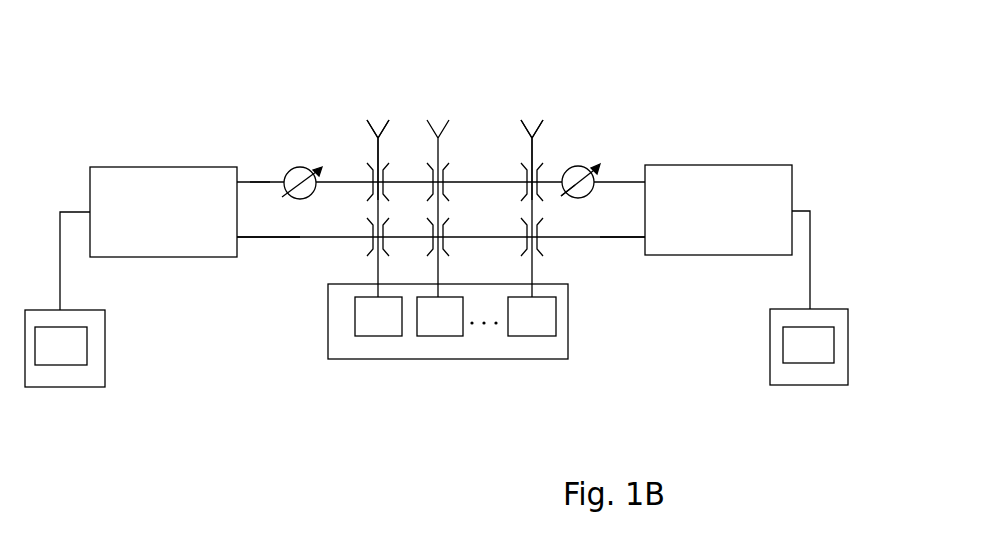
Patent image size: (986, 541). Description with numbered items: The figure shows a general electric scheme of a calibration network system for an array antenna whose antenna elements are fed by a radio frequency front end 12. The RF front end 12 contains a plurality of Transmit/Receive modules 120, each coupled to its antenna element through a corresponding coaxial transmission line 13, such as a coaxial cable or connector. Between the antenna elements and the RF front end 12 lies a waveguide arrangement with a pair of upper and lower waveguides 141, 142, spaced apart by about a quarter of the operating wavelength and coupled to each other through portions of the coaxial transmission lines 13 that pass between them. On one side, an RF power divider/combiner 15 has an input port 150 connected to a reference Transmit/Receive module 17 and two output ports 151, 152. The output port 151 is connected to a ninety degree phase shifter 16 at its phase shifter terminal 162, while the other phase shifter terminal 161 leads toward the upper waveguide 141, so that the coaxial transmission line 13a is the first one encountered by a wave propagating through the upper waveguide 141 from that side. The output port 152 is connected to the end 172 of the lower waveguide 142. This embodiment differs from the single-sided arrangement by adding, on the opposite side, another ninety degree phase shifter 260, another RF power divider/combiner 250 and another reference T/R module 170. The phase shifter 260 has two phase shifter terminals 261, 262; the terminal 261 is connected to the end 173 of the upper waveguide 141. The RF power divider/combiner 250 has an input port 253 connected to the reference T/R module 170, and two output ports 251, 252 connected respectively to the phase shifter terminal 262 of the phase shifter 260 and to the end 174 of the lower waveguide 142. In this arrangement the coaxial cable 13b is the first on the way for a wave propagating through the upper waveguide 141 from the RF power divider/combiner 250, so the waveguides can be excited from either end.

The radio frequency front end 12 is at (520, 359).
The Transmit/Receive modules 120 is at (368, 336).
The coaxial transmission lines 13 is at (438, 103).
The coaxial transmission line 13a is at (376, 147).
The coaxial cable 13b is at (530, 145).
The RF power divider/combiner 15 is at (152, 165).
The input port 150 is at (89, 211).
The output port 151 is at (238, 180).
The output port 152 is at (240, 240).
The 90 degree phase shifter 16 is at (288, 169).
The phase shifter terminal 161 is at (326, 172).
The phase shifter terminal 162 is at (262, 178).
The upper waveguide 141 is at (354, 185).
The lower waveguide 142 is at (302, 236).
The reference Transmit/Receive Module 17 is at (62, 365).
The reference Transmit/Receive Module 170 is at (802, 363).
The end of the lower rectangular waveguide 172 is at (292, 273).
The end of the upper rectangular waveguide 173 is at (560, 118).
The end of the lower rectangular waveguide 174 is at (558, 258).
The RF power divider/combiner 250 is at (718, 164).
The output port 251 is at (642, 180).
The output port 252 is at (642, 240).
The input port 253 is at (795, 209).
The 90 degree phase shifter 260 is at (570, 167).
The phase shifter terminal 261 is at (566, 194).
The phase shifter terminal 262 is at (602, 172).